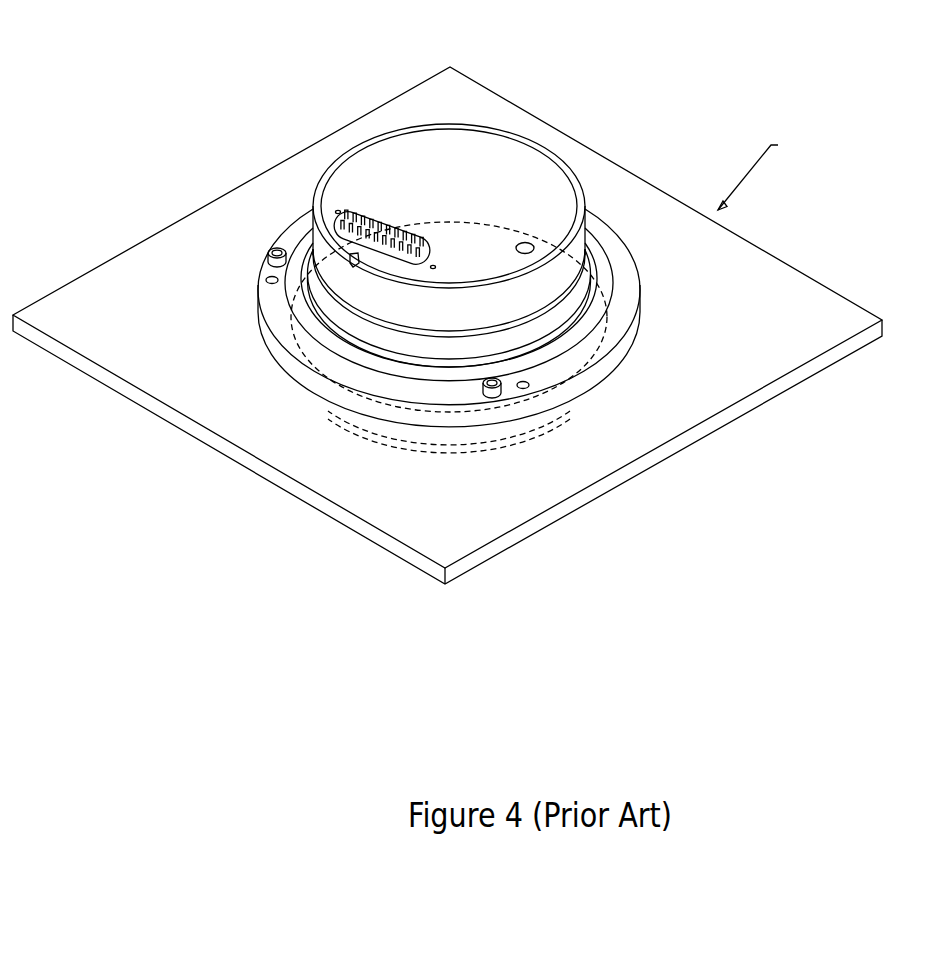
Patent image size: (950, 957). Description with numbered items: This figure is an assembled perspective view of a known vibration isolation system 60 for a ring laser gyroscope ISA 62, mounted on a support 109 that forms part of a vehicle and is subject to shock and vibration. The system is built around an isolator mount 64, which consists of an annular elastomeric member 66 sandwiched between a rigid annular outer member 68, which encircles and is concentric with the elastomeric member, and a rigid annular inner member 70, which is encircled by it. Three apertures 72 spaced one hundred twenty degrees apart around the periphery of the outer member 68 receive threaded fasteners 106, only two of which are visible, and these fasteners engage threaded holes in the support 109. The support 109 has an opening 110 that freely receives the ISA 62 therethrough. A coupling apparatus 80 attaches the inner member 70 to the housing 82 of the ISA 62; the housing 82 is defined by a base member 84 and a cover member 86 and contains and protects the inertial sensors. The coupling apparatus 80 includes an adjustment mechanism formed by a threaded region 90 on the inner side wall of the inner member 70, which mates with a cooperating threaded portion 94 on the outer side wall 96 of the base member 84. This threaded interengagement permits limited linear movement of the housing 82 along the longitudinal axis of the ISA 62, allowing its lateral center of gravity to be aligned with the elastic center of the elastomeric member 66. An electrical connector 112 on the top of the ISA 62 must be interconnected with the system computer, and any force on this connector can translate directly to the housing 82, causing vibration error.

The vibration isolation system 60 is at (766, 171).
The ring laser gyroscope ISA 62 is at (554, 147).
The isolator mount 64 is at (634, 265).
The annular elastomeric member 66 is at (598, 313).
The rigid annular outer member 68 is at (592, 348).
The rigid annular inner member 70 is at (565, 352).
The apertures 72 is at (263, 268).
The coupling apparatus 80 is at (338, 337).
The housing 82 is at (564, 166).
The base member 84 is at (393, 430).
The cover member 86 is at (388, 150).
The threaded region 90 is at (300, 300).
The threaded portion 94 is at (313, 323).
The outer side wall 96 is at (453, 435).
The threaded fastener 106 is at (270, 250).
The support 109 is at (585, 492).
The opening 110 is at (528, 402).
The electrical connector 112 is at (347, 217).